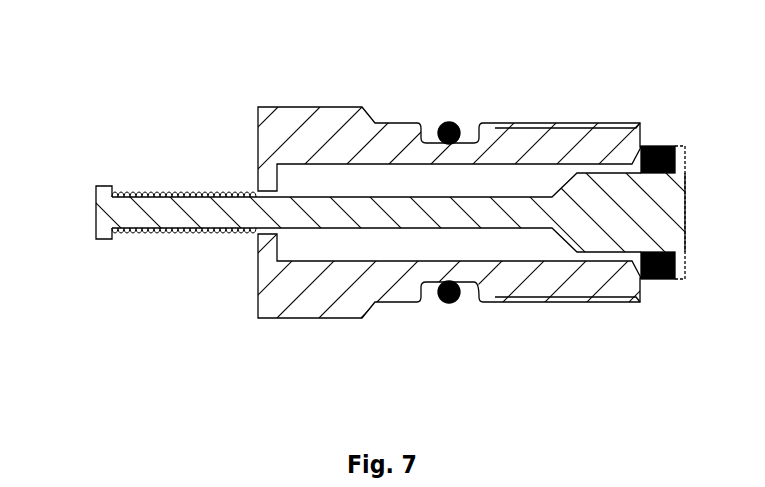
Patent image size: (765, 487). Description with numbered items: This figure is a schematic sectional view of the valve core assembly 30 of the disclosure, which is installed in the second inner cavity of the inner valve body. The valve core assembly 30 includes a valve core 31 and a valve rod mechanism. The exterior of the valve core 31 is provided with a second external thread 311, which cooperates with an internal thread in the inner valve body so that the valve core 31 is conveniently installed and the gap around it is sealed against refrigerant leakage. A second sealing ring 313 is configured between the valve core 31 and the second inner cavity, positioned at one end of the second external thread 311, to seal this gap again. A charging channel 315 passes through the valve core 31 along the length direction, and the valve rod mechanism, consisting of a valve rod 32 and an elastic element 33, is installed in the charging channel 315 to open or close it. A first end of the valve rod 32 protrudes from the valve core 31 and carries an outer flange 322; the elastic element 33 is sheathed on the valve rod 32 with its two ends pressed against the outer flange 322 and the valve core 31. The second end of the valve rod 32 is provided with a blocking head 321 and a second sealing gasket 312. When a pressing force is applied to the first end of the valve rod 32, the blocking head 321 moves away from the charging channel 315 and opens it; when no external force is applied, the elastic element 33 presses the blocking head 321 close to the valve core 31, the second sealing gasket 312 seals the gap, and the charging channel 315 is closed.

The valve core assembly 30 is at (395, 214).
The valve core 31 is at (525, 147).
The second external thread 311 is at (578, 126).
The second sealing gasket 312 is at (655, 147).
The second sealing ring 313 is at (447, 121).
The charging channel 315 is at (340, 187).
The valve rod 32 is at (235, 215).
The blocking head 321 is at (610, 230).
The outer flange 322 is at (110, 192).
The elastic element 33 is at (168, 190).